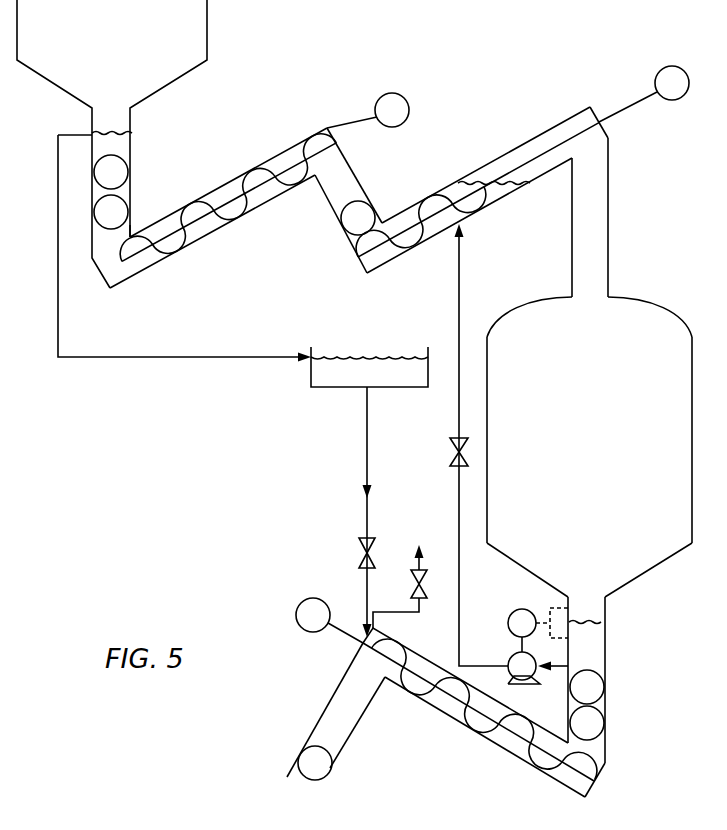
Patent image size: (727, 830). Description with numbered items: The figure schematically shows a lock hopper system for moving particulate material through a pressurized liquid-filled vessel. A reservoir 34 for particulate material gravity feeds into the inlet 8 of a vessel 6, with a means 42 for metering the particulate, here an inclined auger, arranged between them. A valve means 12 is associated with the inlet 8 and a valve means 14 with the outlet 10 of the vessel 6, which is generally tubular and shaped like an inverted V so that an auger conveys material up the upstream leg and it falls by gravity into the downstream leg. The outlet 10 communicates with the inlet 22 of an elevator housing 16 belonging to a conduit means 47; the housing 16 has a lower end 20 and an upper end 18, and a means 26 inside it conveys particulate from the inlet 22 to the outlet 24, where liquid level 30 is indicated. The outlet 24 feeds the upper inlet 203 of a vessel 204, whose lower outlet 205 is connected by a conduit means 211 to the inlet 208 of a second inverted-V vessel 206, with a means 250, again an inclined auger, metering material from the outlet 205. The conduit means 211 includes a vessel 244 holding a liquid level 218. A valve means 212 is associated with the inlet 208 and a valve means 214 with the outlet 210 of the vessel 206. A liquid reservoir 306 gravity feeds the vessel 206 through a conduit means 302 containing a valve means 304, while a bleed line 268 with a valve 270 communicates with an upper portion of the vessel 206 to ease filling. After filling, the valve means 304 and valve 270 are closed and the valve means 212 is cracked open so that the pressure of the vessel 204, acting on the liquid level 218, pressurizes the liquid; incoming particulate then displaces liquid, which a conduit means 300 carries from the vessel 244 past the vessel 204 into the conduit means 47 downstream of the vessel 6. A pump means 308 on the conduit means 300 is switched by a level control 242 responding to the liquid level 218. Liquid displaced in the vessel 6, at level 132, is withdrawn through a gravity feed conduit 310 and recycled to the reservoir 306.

The reservoir for particulate material 34 is at (121, 20).
The liquid level 132 is at (112, 130).
The valve means 12 is at (144, 177).
The inlet 8 is at (131, 232).
The means for metering particulate material 42 is at (270, 139).
The vessel 6 is at (259, 183).
The valve means 14 is at (381, 191).
The outlet 10 is at (459, 193).
The inlet 22 is at (360, 262).
The lower end 20 is at (367, 276).
The means for conveying particulate material 26 is at (475, 176).
The liquid level in conveyor 30 is at (510, 182).
The elevator housing 16 is at (536, 135).
The upper end 18 is at (612, 176).
The conduit means 47 is at (467, 90).
The outlet 24 is at (570, 163).
The upper inlet 203 is at (610, 294).
The vessel 204 is at (589, 431).
The conduit means 300 is at (460, 312).
The conduit 310 is at (180, 358).
The liquid reservoir 306 is at (385, 380).
The conduit means 302 is at (391, 512).
The valve means 304 is at (372, 566).
The valve 270 is at (424, 570).
The bleed line 268 is at (415, 580).
The valve means 214 is at (290, 731).
The outlet 210 is at (313, 711).
The conduit means 211 is at (396, 760).
The vessel 206 is at (450, 702).
The means for metering particulate material 250 is at (496, 762).
The level control 242 is at (514, 610).
The pump means 308 is at (512, 654).
The liquid level 218 is at (588, 621).
The lower outlet 205 is at (606, 602).
The vessel 244 is at (606, 640).
The valve means 212 is at (611, 697).
The inlet 208 is at (627, 661).